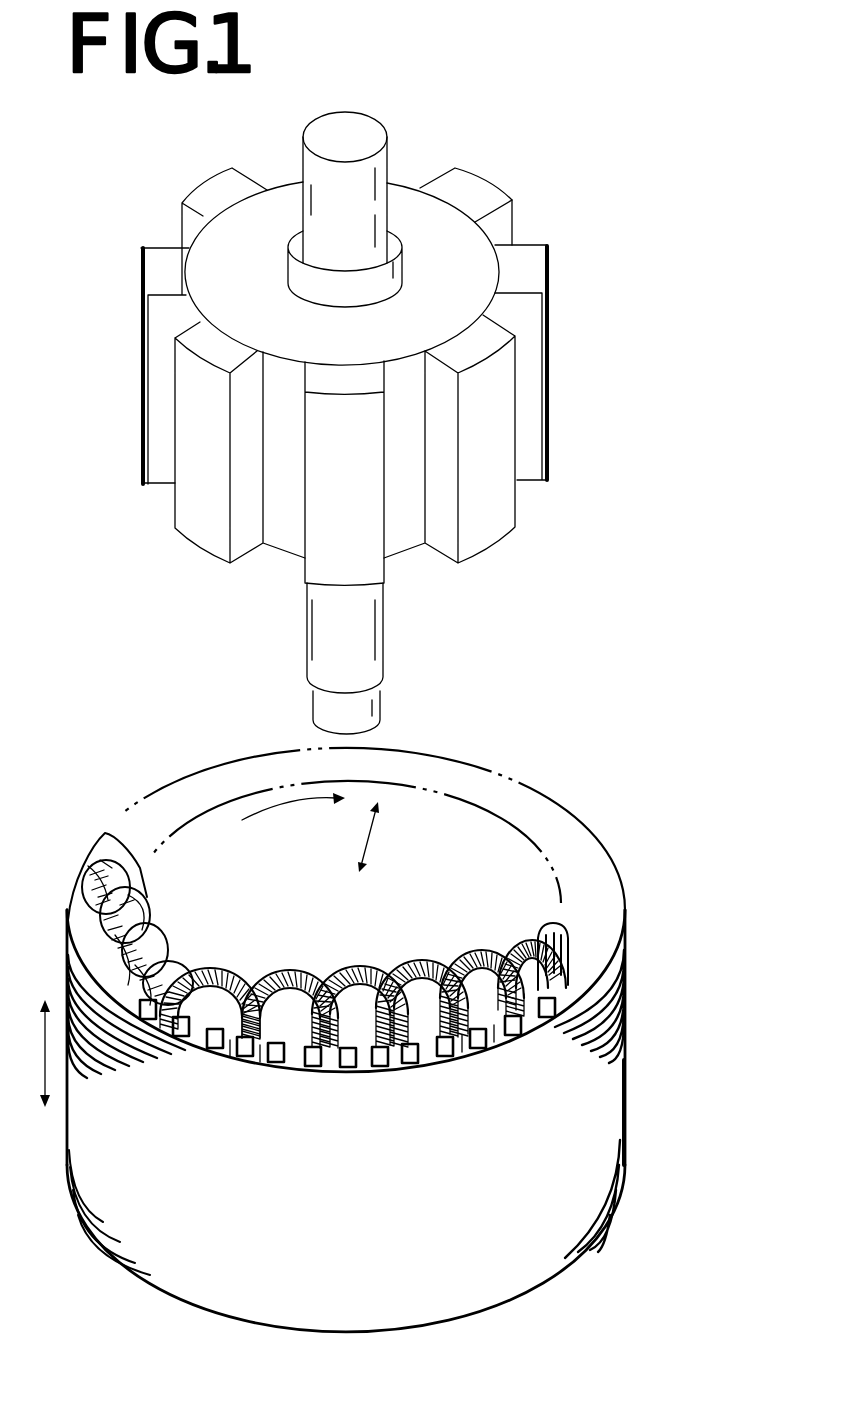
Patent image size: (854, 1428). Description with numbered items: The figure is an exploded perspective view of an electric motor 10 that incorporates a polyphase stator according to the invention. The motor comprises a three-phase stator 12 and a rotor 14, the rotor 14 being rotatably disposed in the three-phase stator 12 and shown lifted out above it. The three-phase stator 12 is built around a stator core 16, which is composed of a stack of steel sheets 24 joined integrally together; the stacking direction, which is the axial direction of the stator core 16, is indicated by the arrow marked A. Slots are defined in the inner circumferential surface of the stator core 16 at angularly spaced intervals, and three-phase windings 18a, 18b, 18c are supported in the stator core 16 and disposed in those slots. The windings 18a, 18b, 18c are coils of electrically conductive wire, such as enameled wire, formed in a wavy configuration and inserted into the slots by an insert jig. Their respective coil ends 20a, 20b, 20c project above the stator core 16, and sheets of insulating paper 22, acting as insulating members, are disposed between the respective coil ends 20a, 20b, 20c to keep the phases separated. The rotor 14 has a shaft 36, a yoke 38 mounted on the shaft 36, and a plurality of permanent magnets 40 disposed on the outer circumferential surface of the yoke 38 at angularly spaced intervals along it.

The electric motor 10 is at (683, 172).
The three-phase stator 12 is at (567, 761).
The rotor 14 is at (515, 181).
The stator core 16 is at (566, 1262).
The three-phase winding 18a is at (270, 1062).
The three-phase winding 18b is at (343, 1068).
The three-phase winding 18c is at (362, 1005).
The coil end 20a is at (220, 982).
The coil end 20b is at (302, 966).
The coil end 20c is at (373, 970).
The insulating paper sheet 22 is at (235, 1045).
The steel sheet 24 is at (627, 1040).
The shaft 36 is at (363, 125).
The yoke 38 is at (208, 281).
The permanent magnet 40 is at (488, 525).